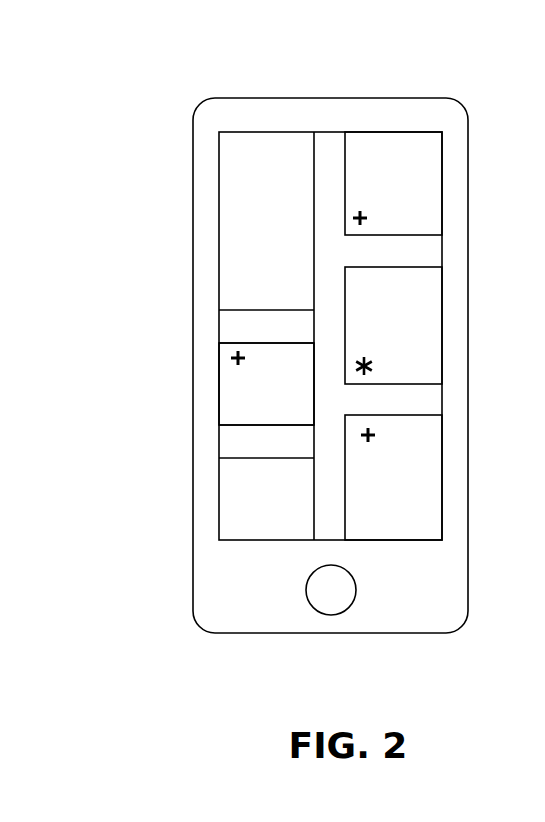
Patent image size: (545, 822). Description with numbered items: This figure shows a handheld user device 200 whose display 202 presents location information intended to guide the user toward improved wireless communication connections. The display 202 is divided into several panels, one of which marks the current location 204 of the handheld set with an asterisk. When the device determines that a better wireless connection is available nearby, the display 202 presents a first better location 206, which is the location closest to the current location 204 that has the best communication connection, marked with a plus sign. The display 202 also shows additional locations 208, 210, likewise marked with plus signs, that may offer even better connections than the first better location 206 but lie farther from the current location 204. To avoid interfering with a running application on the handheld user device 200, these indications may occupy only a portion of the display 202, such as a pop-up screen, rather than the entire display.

The handheld user device 200 is at (81, 72).
The display 202 is at (376, 132).
The current location 204 is at (366, 352).
The first better location 206 is at (377, 444).
The additional location 208 is at (245, 367).
The additional location 210 is at (367, 208).